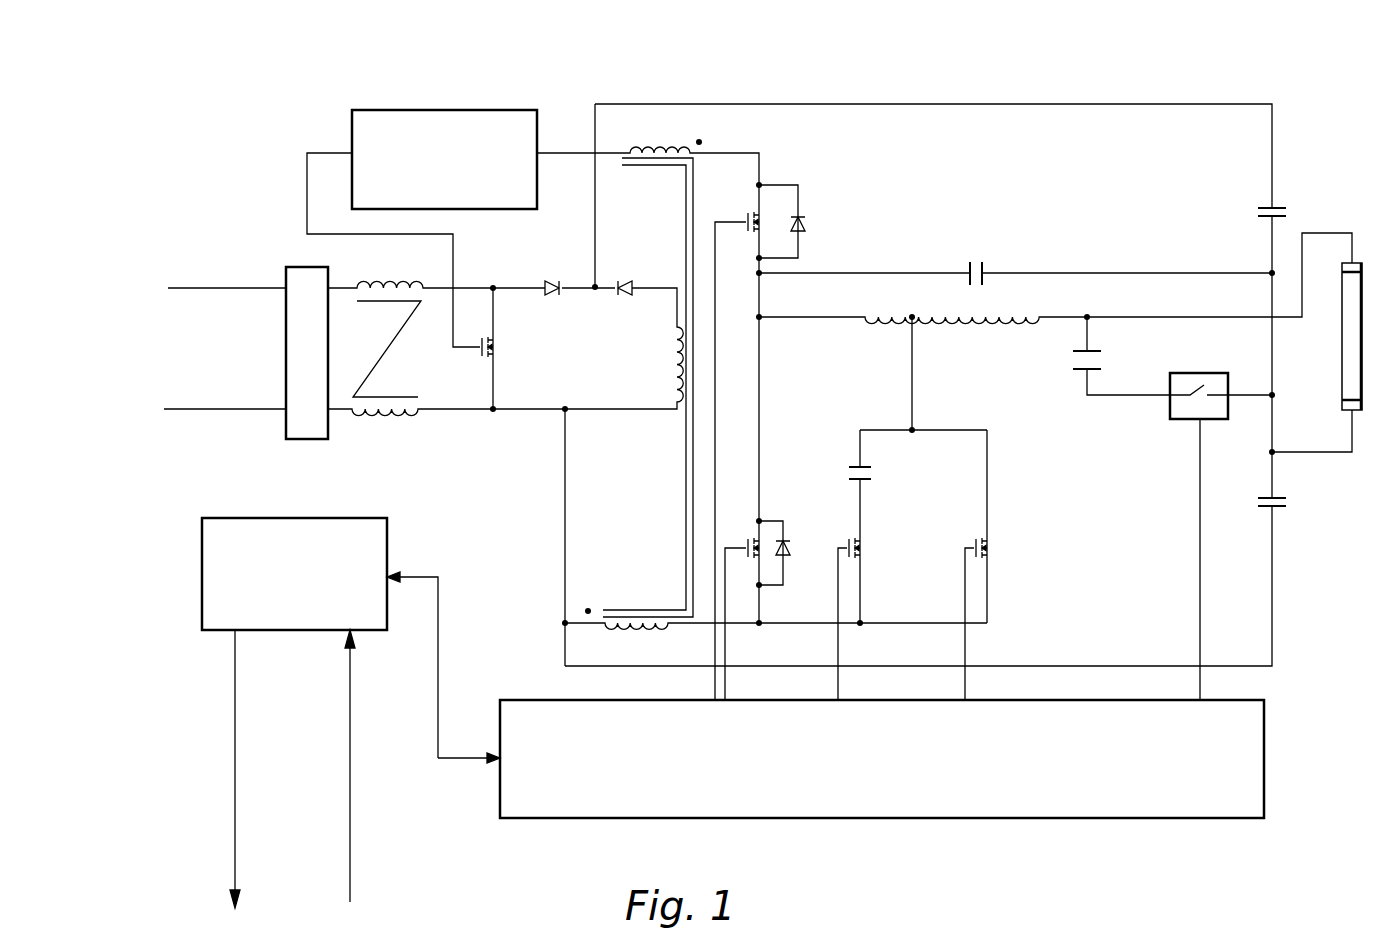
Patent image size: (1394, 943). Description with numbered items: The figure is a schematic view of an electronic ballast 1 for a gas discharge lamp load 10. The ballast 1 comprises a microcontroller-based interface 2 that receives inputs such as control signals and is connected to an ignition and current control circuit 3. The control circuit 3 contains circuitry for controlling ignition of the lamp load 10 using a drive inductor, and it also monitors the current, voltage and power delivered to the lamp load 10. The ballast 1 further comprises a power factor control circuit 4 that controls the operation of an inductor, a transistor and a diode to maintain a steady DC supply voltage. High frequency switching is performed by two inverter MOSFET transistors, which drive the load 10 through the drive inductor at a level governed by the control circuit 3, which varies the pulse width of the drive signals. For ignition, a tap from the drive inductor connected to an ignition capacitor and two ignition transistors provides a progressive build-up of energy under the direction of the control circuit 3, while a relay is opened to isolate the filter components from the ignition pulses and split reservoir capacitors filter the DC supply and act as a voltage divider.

The electronic ballast 1 is at (250, 104).
The microcontroller-based interface 2 is at (387, 533).
The ignition and current control circuit 3 is at (905, 818).
The power factor control circuit 4 is at (352, 138).
The gas discharge lamp load 10 is at (1364, 272).